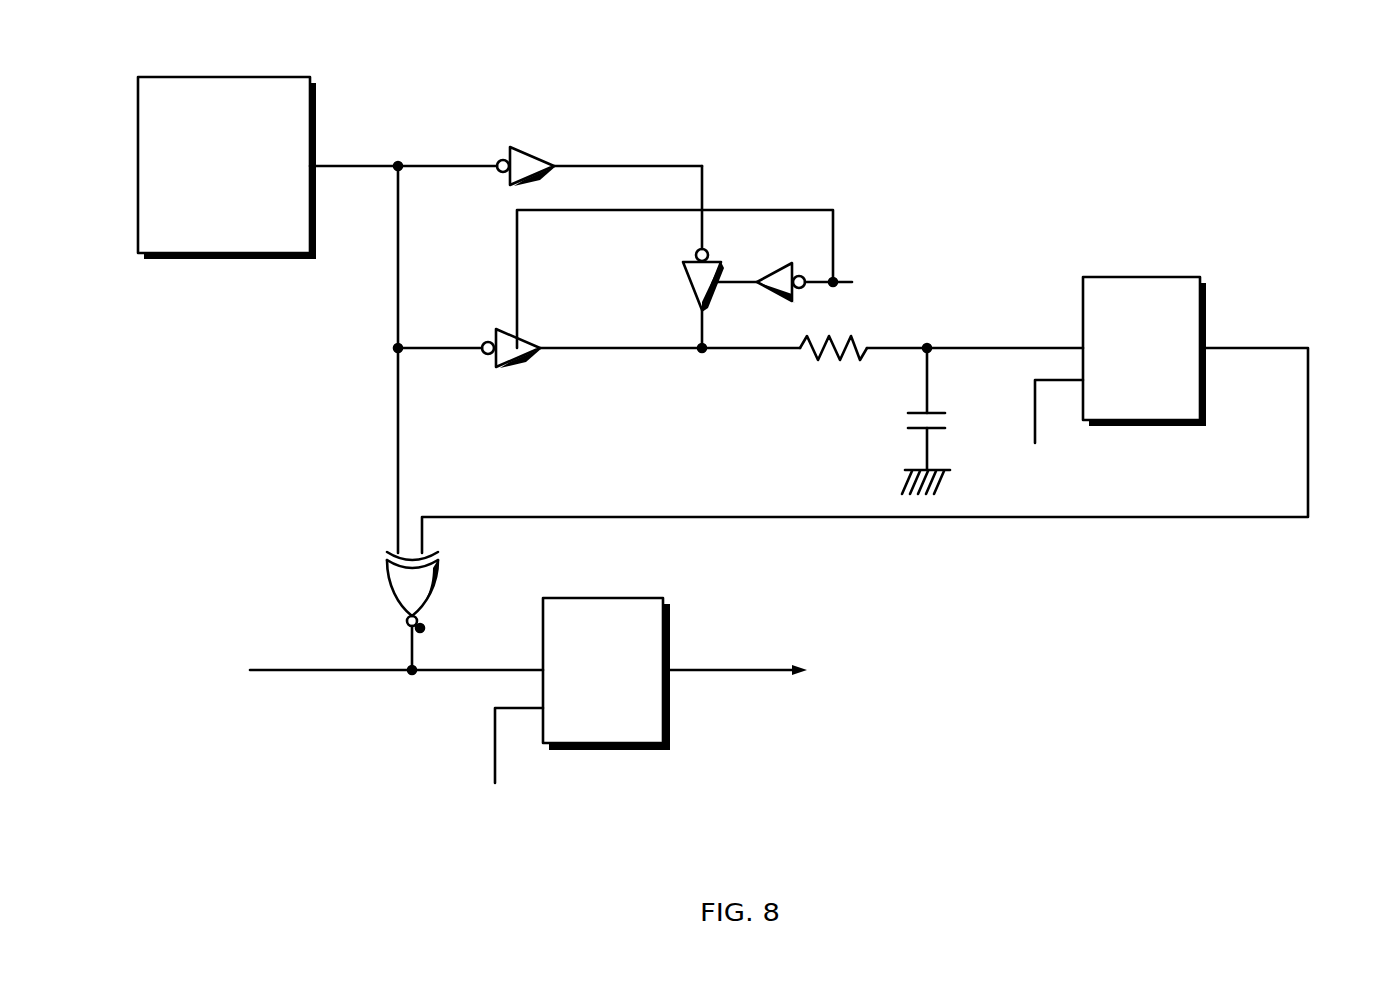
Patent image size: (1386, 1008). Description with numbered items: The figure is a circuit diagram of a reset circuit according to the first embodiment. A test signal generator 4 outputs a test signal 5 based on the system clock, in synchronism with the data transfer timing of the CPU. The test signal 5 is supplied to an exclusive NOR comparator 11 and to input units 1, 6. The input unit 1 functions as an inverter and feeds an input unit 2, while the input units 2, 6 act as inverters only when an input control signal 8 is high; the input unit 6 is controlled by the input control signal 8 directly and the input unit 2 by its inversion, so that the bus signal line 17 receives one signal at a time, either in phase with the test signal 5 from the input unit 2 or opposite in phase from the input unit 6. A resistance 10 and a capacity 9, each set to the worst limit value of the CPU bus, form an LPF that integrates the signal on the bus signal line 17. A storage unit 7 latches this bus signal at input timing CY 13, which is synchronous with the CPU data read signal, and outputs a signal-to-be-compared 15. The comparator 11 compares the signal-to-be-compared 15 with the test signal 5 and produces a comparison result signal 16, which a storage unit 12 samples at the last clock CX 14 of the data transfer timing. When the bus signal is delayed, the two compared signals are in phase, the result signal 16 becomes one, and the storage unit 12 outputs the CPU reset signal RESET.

The input unit 1 is at (541, 158).
The input unit 2 is at (681, 282).
The test signal generator 4 is at (216, 220).
The test signal 5 is at (398, 162).
The input unit 6 is at (507, 372).
The storage unit 7 is at (1142, 426).
The input control signal 8 is at (786, 209).
The capacity 9 is at (915, 412).
The resistance 10 is at (835, 357).
The comparator 11 is at (442, 590).
The storage unit 12 is at (670, 630).
The input timing CY 13 is at (1048, 431).
The clock CX 14 is at (505, 764).
The signal-to-be-compared 15 is at (1192, 518).
The comparison result signal 16 is at (457, 673).
The bus signal line 17 is at (1000, 348).